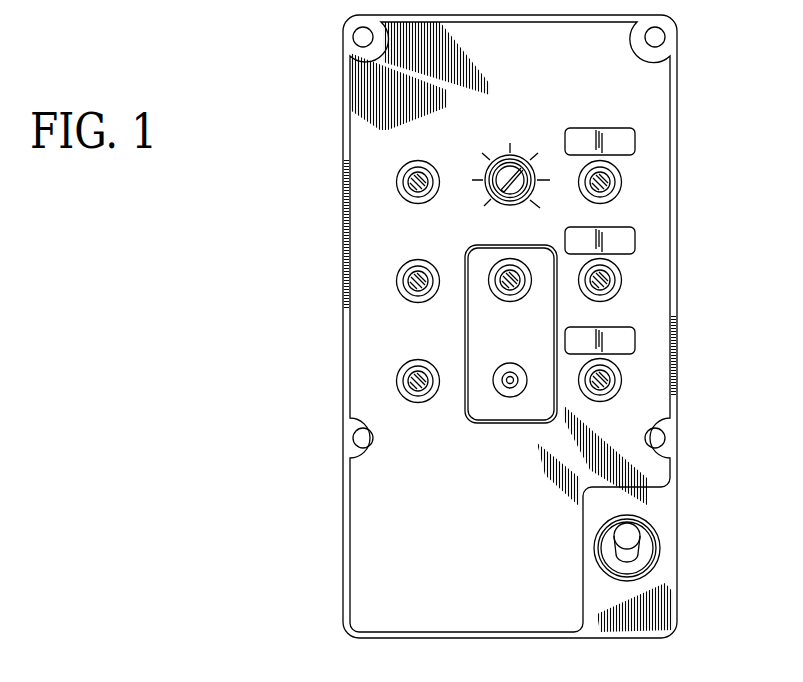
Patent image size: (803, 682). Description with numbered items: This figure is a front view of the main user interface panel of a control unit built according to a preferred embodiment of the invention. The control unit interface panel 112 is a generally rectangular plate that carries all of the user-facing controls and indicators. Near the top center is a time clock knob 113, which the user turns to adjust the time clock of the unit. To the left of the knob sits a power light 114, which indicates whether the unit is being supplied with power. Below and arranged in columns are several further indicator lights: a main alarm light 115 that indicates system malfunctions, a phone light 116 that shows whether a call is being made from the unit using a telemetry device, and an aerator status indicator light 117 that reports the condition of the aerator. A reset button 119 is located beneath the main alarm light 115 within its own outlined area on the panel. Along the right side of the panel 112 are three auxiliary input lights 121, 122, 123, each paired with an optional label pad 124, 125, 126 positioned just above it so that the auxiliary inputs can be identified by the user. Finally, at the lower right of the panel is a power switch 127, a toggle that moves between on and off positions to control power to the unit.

The control unit interface panel 112 is at (678, 624).
The time clock knob 113 is at (492, 176).
The power light 114 is at (408, 182).
The main alarm light 115 is at (502, 275).
The phone light 116 is at (408, 281).
The aerator status indicator light 117 is at (408, 381).
The reset button 119 is at (495, 384).
The auxiliary input light 121 is at (612, 181).
The auxiliary input light 122 is at (612, 280).
The auxiliary input light 123 is at (612, 380).
The label pad 124 is at (635, 140).
The label pad 125 is at (623, 240).
The label pad 126 is at (623, 338).
The power switch 127 is at (630, 533).